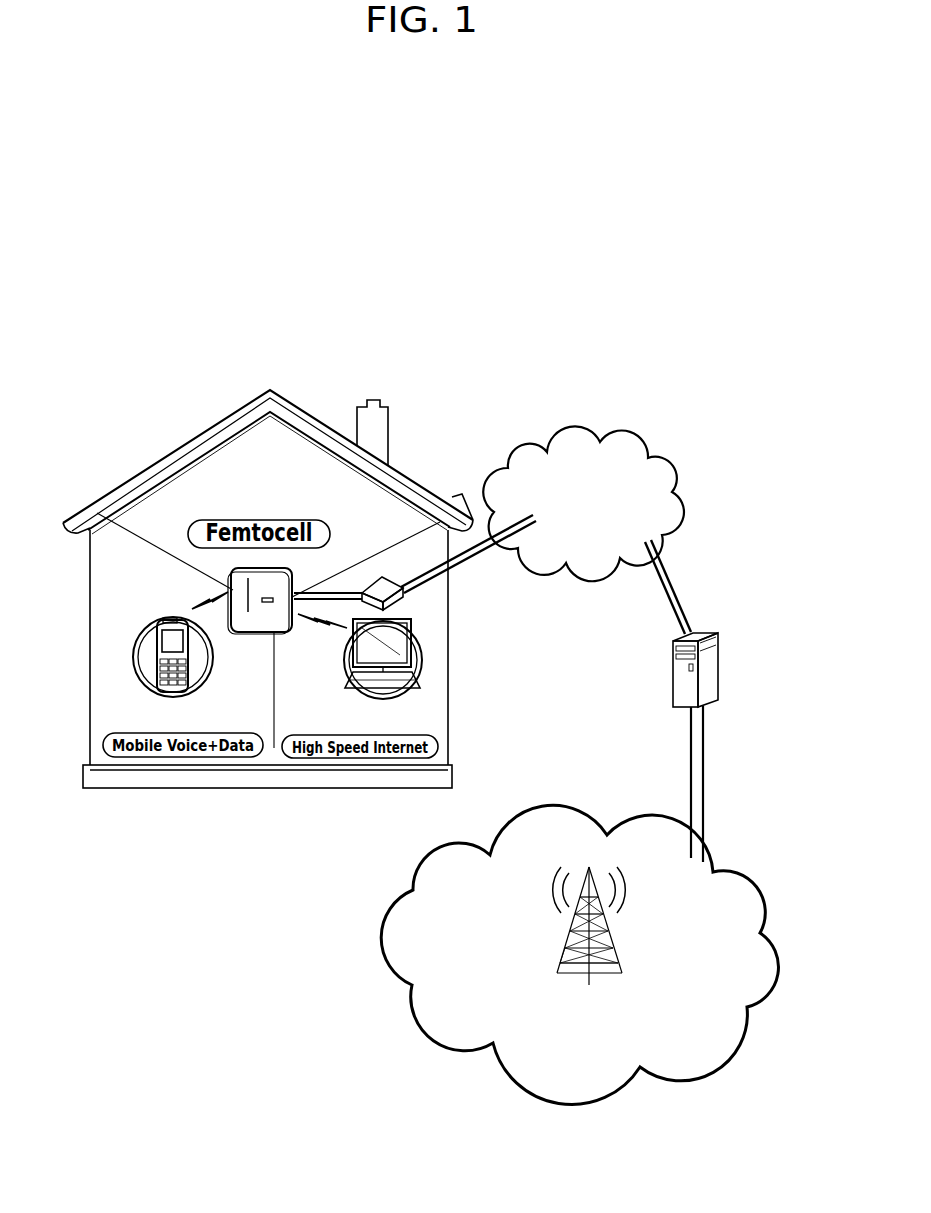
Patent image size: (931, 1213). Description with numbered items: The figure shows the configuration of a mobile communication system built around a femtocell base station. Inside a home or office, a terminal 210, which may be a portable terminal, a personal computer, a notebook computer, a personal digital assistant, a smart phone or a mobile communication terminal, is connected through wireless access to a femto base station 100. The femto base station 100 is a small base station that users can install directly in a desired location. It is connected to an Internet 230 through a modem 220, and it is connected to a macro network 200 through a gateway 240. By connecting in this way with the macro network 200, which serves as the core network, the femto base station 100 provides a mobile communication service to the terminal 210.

The femto base station 100 is at (229, 582).
The macro network 200 is at (728, 853).
The terminal 210 is at (393, 694).
The modem 220 is at (380, 583).
The Internet 230 is at (643, 434).
The gateway 240 is at (706, 673).